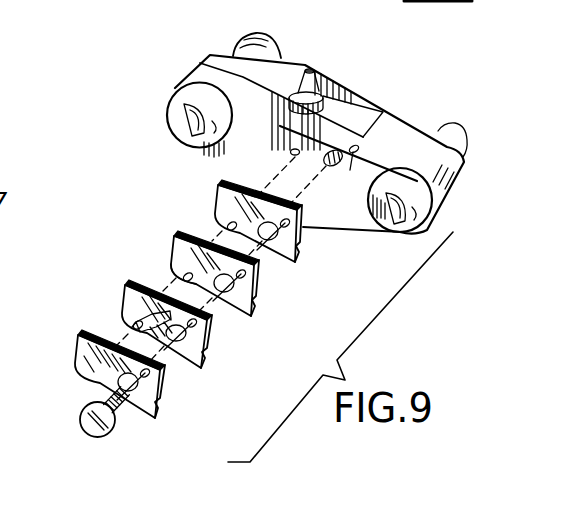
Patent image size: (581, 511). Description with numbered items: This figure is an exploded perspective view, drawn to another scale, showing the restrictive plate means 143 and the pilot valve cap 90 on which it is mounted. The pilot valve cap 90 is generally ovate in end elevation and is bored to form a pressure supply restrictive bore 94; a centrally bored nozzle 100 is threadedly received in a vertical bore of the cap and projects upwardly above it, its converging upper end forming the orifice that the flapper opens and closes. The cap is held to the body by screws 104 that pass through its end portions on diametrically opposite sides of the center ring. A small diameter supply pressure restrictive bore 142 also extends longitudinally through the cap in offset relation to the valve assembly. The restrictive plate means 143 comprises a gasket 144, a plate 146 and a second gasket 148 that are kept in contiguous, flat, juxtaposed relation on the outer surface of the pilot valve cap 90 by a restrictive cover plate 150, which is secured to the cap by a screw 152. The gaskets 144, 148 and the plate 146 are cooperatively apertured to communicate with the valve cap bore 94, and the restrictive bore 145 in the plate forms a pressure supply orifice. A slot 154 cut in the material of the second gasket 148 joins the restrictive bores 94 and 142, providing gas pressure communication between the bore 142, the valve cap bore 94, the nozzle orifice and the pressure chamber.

The pilot valve cap 90 is at (440, 129).
The nozzle 100 is at (268, 74).
The screws 104 is at (168, 114).
The pressure supply restrictive bore 94 is at (294, 150).
The supply pressure restrictive bore 142 is at (350, 170).
The restrictive plate means 143 is at (187, 433).
The gasket 144 is at (220, 203).
The restrictive bore 145 is at (172, 266).
The plate 146 is at (175, 247).
The second gasket 148 is at (127, 296).
The slot 154 is at (136, 322).
The restrictive cover plate 150 is at (80, 362).
The screw 152 is at (81, 417).